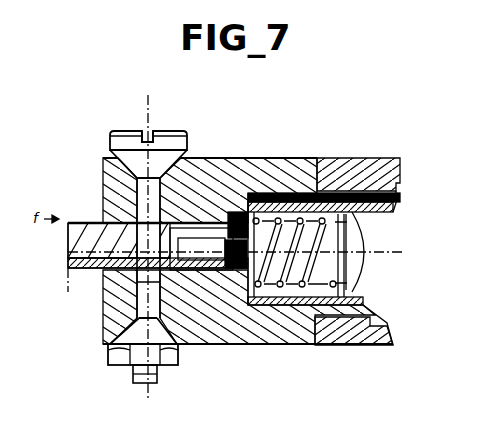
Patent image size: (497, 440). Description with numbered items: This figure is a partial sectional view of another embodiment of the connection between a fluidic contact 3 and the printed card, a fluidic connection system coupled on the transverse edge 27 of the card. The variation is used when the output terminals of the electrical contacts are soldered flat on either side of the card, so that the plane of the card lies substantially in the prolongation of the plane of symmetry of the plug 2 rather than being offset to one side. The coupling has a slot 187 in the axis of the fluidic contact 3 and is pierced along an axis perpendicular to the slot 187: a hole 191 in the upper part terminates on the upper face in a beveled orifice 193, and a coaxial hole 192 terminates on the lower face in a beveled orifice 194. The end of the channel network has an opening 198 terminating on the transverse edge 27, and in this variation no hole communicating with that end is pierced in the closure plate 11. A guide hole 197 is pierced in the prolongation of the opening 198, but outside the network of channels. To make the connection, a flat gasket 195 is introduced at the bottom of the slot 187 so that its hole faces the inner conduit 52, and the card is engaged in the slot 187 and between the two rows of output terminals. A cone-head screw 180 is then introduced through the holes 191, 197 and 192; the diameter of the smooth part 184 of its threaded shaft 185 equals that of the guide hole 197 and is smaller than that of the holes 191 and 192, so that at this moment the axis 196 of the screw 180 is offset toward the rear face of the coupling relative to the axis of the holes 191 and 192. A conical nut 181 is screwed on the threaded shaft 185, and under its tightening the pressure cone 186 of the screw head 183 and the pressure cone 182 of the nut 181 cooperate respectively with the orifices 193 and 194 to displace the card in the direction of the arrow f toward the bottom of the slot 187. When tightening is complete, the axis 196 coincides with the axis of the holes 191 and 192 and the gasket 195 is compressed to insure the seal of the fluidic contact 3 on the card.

The plug 2 is at (366, 166).
The fluidic contact 3 is at (380, 215).
The closure plate 11 is at (68, 283).
The transverse edge 27 is at (265, 212).
The inner conduit 52 is at (248, 266).
The cone-head screw 180 is at (110, 122).
The conical nut 181 is at (104, 355).
The pressure cone of nut 182 is at (123, 338).
The head of screw 183 is at (172, 140).
The smooth part 184 is at (138, 211).
The threaded shaft 185 is at (132, 385).
The pressure cone of screw head 186 is at (125, 181).
The slot 187 is at (104, 268).
The hole 191 is at (176, 195).
The hole 192 is at (170, 293).
The beveled orifice 193 is at (187, 158).
The beveled orifice 194 is at (186, 344).
The flat gasket 195 is at (238, 212).
The axis of screw 196 is at (148, 108).
The guide hole 197 is at (127, 245).
The opening 198 is at (238, 270).